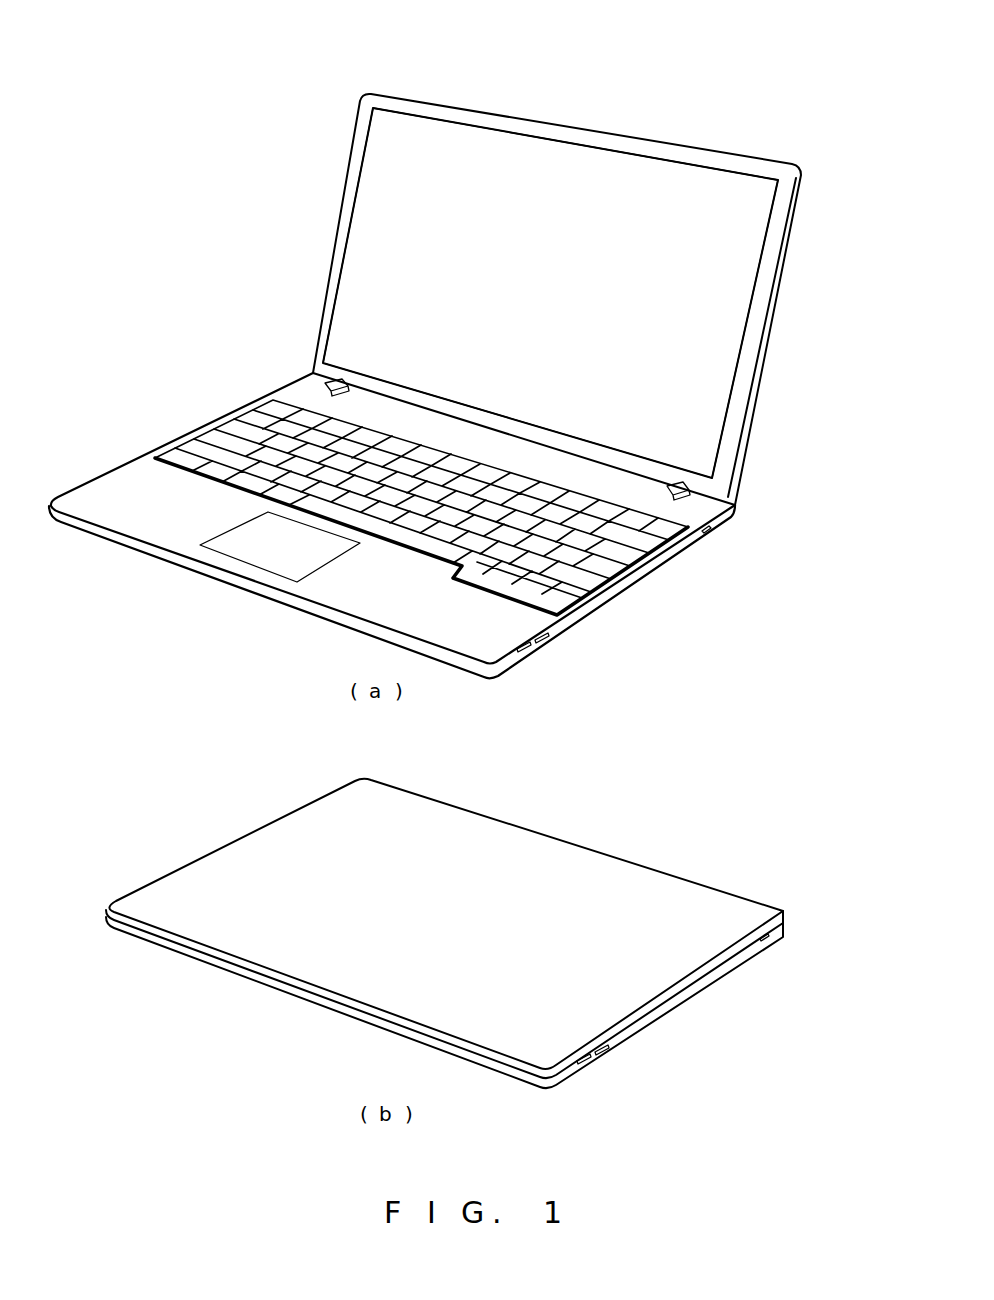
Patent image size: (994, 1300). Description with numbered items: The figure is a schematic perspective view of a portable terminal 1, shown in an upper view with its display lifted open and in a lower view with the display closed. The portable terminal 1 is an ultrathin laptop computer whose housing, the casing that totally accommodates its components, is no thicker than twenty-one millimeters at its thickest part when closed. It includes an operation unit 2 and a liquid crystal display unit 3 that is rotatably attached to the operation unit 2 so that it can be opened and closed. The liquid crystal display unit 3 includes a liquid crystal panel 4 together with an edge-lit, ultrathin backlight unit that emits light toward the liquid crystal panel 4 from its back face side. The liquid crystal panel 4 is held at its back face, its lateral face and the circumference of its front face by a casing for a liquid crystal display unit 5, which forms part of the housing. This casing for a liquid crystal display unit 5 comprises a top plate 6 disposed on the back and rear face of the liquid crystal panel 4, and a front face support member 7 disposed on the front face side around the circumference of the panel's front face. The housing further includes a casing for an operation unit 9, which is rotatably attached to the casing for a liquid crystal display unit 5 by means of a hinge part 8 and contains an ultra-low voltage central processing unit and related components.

The portable terminal 1 is at (455, 545).
The operation unit 2 is at (392, 489).
The liquid crystal display unit 3 is at (539, 299).
The liquid crystal panel 4 is at (748, 243).
The casing for a liquid crystal display unit 5 is at (748, 448).
The top plate 6 is at (770, 333).
The front face support member 7 is at (747, 382).
The hinge part 8 is at (685, 493).
The casing for an operation unit 9 is at (688, 549).